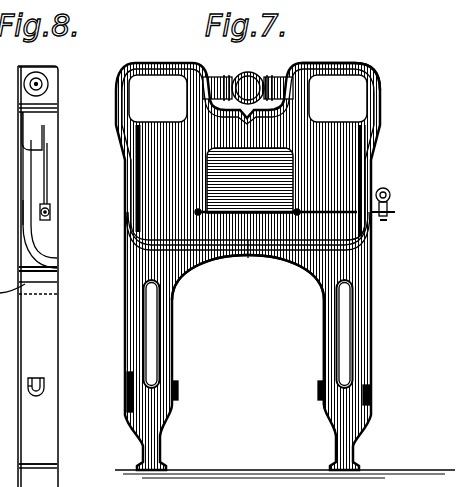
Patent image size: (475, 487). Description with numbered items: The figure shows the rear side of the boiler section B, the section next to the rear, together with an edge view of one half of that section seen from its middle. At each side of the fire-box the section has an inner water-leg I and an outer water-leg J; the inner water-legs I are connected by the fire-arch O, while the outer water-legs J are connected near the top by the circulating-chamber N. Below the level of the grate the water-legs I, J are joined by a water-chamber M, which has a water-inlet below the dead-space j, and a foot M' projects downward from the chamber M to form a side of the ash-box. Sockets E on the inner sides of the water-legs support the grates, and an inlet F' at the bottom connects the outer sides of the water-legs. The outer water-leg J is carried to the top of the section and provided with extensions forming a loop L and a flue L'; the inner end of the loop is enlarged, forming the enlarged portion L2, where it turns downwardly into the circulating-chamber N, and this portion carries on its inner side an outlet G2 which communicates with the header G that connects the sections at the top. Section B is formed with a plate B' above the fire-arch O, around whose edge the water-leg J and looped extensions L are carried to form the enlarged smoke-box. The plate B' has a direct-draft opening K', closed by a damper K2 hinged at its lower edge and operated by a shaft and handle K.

In FIG. 8, the loop L is at (48, 55).
In FIG. 7, the loop L is at (341, 65).
In FIG. 8, the outlet G2 is at (48, 84).
In FIG. 8, the circulating-chamber N is at (40, 130).
In FIG. 8, the direct-draft opening K' is at (54, 190).
In FIG. 7, the direct-draft opening K' is at (307, 165).
In FIG. 8, the damper K2 is at (50, 183).
In FIG. 7, the damper K2 is at (210, 182).
In FIG. 8, the shaft and handle K is at (66, 213).
In FIG. 7, the shaft and handle K is at (396, 202).
In FIG. 8, the section B is at (57, 222).
In FIG. 8, the inner water-leg I is at (29, 380).
In FIG. 7, the inner water-leg I is at (332, 346).
In FIG. 8, the dead-space j is at (45, 386).
In FIG. 7, the dead-space j is at (150, 352).
In FIG. 8, the socket E is at (28, 386).
In FIG. 7, the socket E is at (178, 390).
In FIG. 8, the foot M' is at (38, 450).
In FIG. 7, the foot M' is at (124, 448).
In FIG. 7, the header G is at (243, 72).
In FIG. 7, the flue L' is at (158, 98).
In FIG. 7, the enlarged portion of the loop L2 is at (300, 98).
In FIG. 7, the plate B' is at (372, 182).
In FIG. 7, the fire-arch O is at (312, 278).
In FIG. 7, the outer water-leg J is at (356, 345).
In FIG. 7, the inlet F' is at (358, 392).
In FIG. 7, the water-chamber M is at (361, 422).